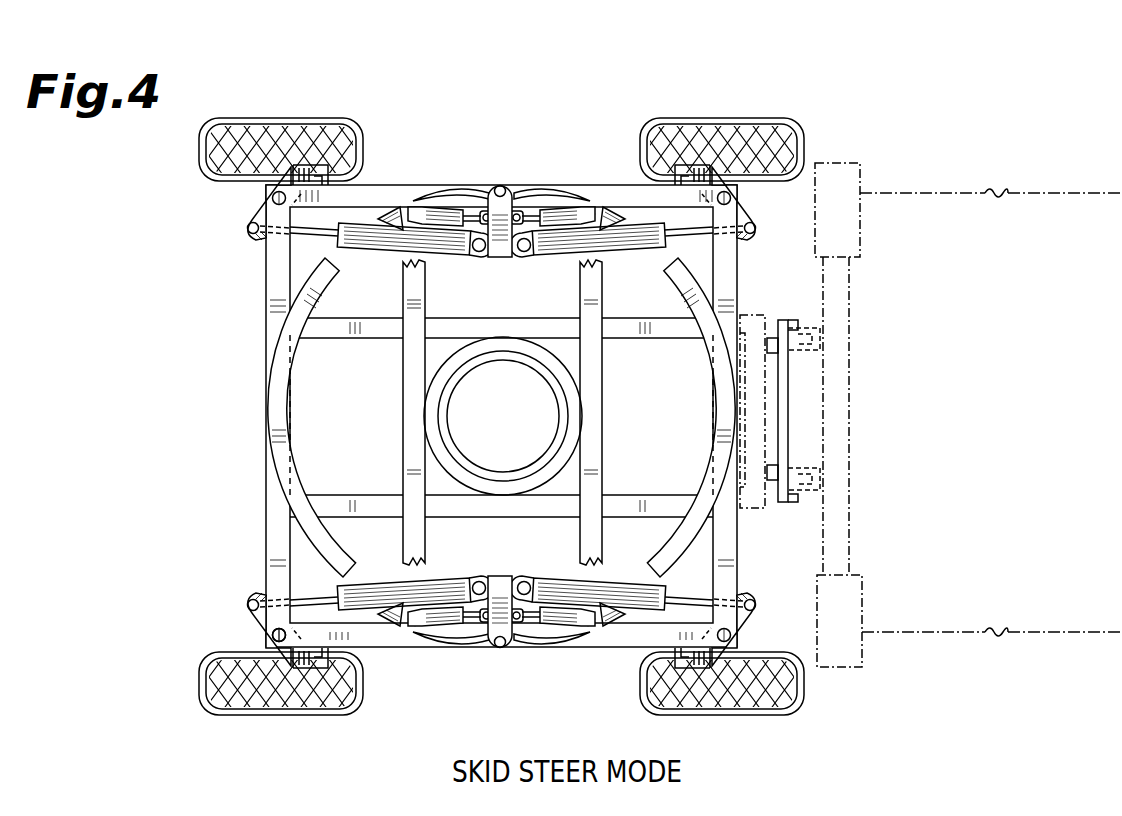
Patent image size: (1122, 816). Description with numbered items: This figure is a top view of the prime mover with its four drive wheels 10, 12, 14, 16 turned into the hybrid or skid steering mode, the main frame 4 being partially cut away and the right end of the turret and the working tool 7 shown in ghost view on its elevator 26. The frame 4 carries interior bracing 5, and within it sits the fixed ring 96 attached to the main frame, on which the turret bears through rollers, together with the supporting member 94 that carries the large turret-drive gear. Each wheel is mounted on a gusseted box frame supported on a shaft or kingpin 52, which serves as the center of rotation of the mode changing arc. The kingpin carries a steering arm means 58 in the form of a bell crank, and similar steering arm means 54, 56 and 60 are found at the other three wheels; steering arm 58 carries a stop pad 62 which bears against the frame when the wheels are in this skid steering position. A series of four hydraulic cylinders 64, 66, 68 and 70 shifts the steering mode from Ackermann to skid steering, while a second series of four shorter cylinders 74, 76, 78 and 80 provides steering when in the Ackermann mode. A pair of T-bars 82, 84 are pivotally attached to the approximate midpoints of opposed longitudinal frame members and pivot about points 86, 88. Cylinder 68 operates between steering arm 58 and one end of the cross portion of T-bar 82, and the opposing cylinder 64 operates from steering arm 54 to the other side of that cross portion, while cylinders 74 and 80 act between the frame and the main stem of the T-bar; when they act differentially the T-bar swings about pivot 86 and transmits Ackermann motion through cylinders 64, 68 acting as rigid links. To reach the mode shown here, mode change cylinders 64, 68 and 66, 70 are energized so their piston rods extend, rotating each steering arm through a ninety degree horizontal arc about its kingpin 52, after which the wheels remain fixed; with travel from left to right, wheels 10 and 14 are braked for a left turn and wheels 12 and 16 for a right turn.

The frame 4 is at (264, 288).
The interior bracing 5 is at (650, 337).
The working tool 7 is at (948, 214).
The drive wheel 10 is at (797, 120).
The drive wheel 12 is at (800, 694).
The drive wheel 14 is at (352, 120).
The drive wheel 16 is at (350, 716).
The elevator 26 is at (800, 316).
The shaft or kingpin 52 is at (272, 637).
The steering arm means 54 is at (745, 630).
The steering arm means 56 is at (750, 212).
The steering arm means 58 is at (245, 614).
The steering arm means 60 is at (258, 210).
The stop pad 62 is at (352, 647).
The hydraulic cylinder 64 is at (612, 590).
The hydraulic cylinder 66 is at (638, 240).
The hydraulic cylinder 68 is at (390, 588).
The hydraulic cylinder 70 is at (392, 240).
The shorter cylinder 74 is at (555, 622).
The shorter cylinder 76 is at (557, 212).
The shorter cylinder 78 is at (440, 210).
The shorter cylinder 80 is at (450, 620).
The T-bar 82 is at (495, 585).
The T-bar 84 is at (506, 254).
The pivot point 86 is at (498, 648).
The pivot point 88 is at (500, 185).
The supporting member 94 is at (550, 458).
The fixed ring 96 is at (700, 522).